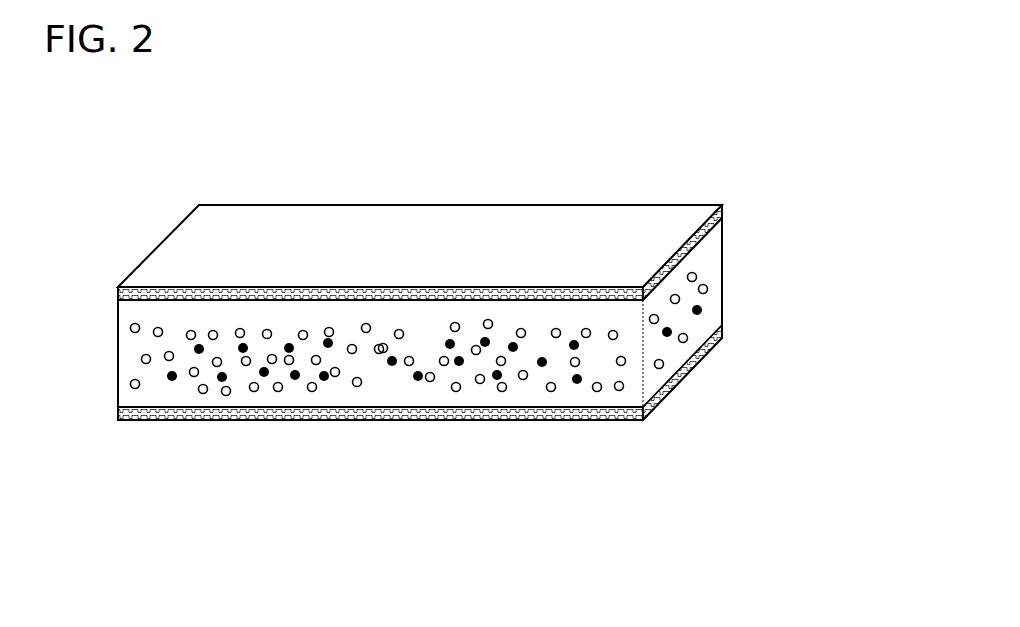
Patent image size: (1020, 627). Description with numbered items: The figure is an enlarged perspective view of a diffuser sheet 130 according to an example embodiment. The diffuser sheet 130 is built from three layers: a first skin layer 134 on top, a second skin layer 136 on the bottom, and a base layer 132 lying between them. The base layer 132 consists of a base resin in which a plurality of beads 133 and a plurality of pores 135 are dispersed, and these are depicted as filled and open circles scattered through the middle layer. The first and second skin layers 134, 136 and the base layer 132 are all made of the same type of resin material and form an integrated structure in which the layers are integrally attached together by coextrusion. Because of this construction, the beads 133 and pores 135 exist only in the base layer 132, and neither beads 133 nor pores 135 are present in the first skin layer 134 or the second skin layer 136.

The diffuser sheet 130 is at (178, 186).
The base layer 132 is at (709, 258).
The beads 133 is at (172, 381).
The first skin layer 134 is at (470, 288).
The pores 135 is at (366, 323).
The second skin layer 136 is at (407, 421).